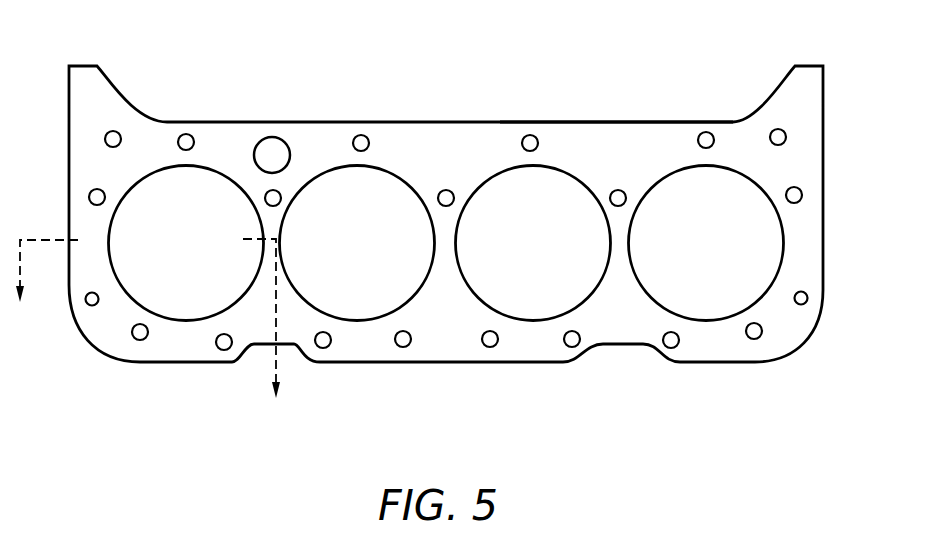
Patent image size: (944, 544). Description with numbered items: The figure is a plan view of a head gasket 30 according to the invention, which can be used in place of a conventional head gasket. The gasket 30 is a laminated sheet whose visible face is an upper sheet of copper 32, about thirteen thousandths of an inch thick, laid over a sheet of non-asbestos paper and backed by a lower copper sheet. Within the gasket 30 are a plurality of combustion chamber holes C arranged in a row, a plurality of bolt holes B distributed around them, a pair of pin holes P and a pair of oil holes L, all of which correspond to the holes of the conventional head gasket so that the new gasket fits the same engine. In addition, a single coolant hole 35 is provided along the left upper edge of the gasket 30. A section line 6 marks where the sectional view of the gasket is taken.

The head gasket 30 is at (460, 80).
The upper sheet of copper 32 is at (602, 148).
The coolant hole 35 is at (291, 112).
The combustion chamber holes C is at (190, 260).
The bolt holes B is at (447, 240).
The oil holes L is at (486, 112).
The pin holes P is at (454, 323).
The section line 6- 6 is at (148, 335).